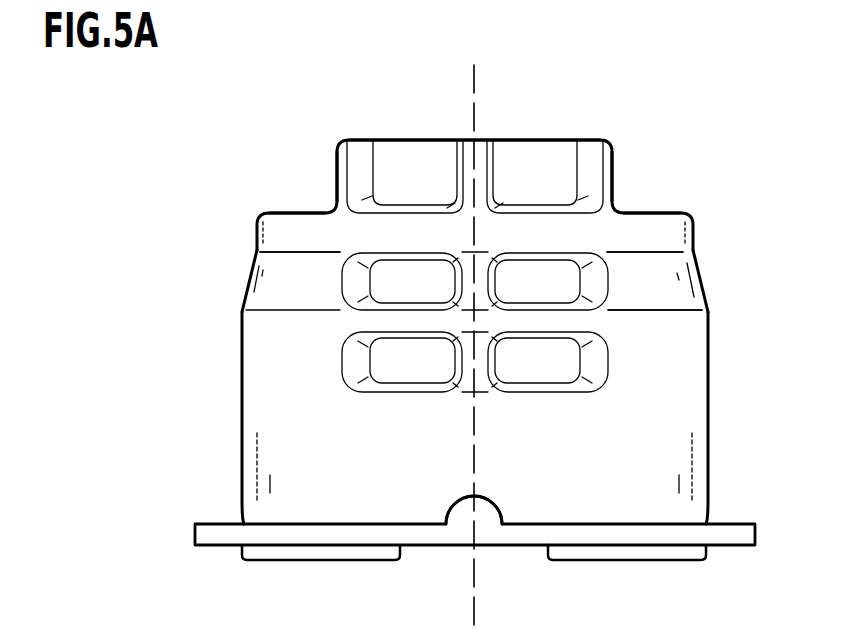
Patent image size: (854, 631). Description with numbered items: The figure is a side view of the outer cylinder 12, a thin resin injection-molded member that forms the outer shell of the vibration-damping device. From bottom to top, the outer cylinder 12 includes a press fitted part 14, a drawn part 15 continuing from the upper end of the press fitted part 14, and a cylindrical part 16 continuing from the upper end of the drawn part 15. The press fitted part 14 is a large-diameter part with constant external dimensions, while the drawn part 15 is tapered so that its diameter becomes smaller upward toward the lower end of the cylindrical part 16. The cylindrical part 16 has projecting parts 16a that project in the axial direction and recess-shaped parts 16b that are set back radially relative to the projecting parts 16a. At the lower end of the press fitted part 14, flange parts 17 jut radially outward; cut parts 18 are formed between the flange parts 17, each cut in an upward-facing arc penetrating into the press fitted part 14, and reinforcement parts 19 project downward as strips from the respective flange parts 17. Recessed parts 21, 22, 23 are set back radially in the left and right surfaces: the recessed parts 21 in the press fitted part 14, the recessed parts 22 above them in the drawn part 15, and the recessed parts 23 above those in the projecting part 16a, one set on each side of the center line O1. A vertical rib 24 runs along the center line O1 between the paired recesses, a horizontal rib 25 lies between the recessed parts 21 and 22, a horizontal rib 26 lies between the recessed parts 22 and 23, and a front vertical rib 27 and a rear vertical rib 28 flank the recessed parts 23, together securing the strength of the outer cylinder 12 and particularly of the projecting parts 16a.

The outer cylinder 12 is at (474, 338).
The press fitted part 14 is at (708, 437).
The drawn part 15 is at (703, 277).
The cylindrical part 16 is at (697, 233).
The projecting part 16a is at (582, 140).
The recess-shaped part 16b is at (290, 211).
The flange part 17 is at (200, 536).
The cut part 18 is at (500, 535).
The reinforcement part 19 is at (268, 560).
The recessed part 21 is at (358, 361).
The recessed part 22 is at (352, 283).
The recessed part 23 is at (405, 165).
The vertical rib 24 is at (487, 322).
The horizontal rib 25 is at (592, 320).
The horizontal rib 26 is at (545, 232).
The front vertical rib 27 is at (332, 167).
The rear vertical rib 28 is at (608, 170).
The center line O1 is at (474, 425).